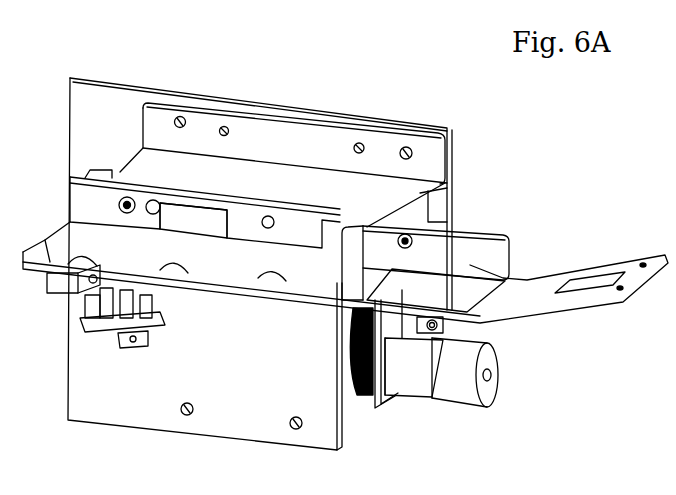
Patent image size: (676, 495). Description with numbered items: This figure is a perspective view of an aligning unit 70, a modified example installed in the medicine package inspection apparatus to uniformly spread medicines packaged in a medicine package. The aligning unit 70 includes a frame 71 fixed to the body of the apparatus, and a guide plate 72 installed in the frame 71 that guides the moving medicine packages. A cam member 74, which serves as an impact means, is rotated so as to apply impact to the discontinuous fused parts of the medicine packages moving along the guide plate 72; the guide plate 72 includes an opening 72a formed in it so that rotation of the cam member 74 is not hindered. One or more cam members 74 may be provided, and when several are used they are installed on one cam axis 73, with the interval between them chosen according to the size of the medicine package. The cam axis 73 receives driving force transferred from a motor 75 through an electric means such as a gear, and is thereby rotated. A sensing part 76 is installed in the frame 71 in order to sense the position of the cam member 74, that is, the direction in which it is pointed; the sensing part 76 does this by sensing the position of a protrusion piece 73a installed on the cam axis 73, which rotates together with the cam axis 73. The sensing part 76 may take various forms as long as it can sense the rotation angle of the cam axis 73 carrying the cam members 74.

The aligning unit 70 is at (312, 78).
The frame 71 is at (250, 427).
The guide plate 72 is at (65, 227).
The opening 72a is at (201, 220).
The cam axis 73 is at (255, 238).
The protrusion piece 73a is at (93, 281).
The cam member 74 is at (440, 187).
The motor 75 is at (455, 393).
The sensing part 76 is at (85, 312).